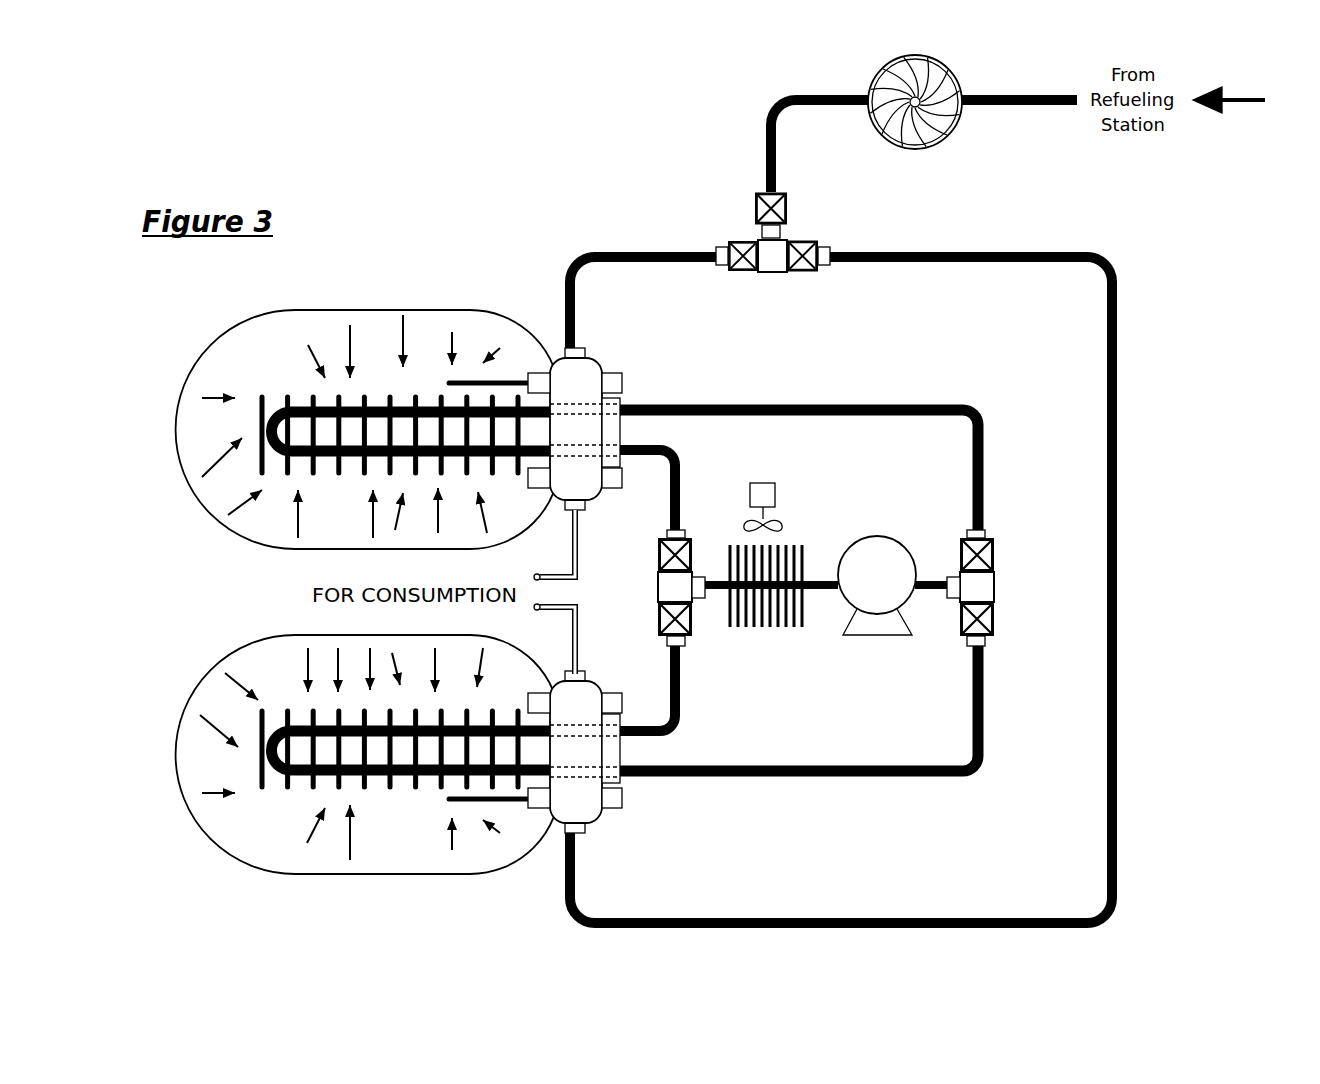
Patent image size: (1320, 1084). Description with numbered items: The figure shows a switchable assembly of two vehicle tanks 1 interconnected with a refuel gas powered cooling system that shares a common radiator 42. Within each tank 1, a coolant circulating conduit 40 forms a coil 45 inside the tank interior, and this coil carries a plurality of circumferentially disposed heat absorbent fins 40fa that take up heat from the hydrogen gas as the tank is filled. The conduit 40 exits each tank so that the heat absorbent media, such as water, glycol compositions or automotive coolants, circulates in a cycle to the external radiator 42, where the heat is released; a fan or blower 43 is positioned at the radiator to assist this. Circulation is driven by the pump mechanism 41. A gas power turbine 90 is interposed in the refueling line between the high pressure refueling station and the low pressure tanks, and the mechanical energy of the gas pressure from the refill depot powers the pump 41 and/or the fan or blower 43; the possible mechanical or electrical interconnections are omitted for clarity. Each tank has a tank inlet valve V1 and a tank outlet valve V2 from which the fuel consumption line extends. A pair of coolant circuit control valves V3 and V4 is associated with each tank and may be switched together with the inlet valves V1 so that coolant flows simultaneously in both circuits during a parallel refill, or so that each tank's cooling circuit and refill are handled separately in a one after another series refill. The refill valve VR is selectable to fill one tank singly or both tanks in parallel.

The on board tank 1 is at (265, 548).
The coolant circulating conduit 40 is at (681, 445).
The heat absorbent fins 40fa is at (287, 397).
The coil within the tank interior 45 is at (323, 460).
The pump mechanism 41 is at (880, 635).
The radiator 42 is at (780, 627).
The fan or blower 43 is at (766, 492).
The gas power turbine 90 is at (952, 128).
The tank inlet valve V1 is at (610, 369).
The tank outlet valve V2 is at (610, 488).
The coolant circuit control valve V3 is at (657, 562).
The coolant circuit control valve V4 is at (995, 551).
The refill valve VR is at (757, 237).